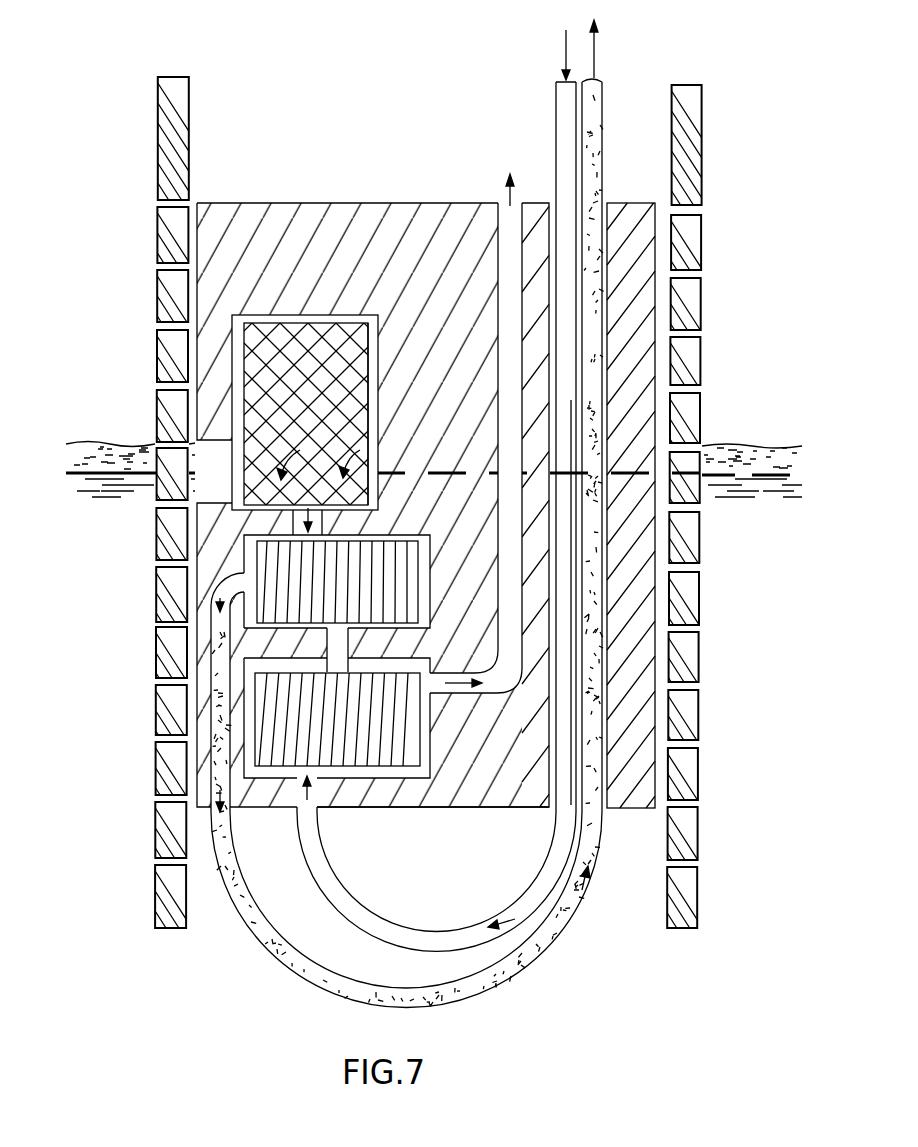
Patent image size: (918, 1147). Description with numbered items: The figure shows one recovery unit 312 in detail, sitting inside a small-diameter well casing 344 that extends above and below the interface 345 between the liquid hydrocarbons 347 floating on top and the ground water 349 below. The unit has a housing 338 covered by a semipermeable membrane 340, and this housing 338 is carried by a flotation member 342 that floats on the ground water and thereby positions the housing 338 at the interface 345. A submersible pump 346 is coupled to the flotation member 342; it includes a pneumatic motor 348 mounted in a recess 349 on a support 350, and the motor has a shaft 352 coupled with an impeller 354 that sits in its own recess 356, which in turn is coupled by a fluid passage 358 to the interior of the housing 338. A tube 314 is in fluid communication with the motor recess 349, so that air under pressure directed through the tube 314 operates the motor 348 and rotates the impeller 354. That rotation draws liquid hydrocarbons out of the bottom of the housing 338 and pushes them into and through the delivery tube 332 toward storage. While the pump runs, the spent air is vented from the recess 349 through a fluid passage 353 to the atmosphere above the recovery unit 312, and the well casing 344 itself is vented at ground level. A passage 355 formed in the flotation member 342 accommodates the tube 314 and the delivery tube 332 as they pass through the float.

The recovery unit 312 is at (291, 180).
The tube 314 is at (556, 110).
The delivery tube 332 is at (600, 106).
The housing 338 is at (382, 435).
The semipermeable membrane 340 is at (258, 355).
The flotation member 342 is at (345, 215).
The well casing 344 is at (708, 130).
The interface 345 is at (765, 470).
The submersible pump 346 is at (424, 735).
The liquid hydrocarbons 347 is at (721, 455).
The pneumatic motor 348 is at (262, 700).
The ground water / recess 349 is at (768, 497).
The support 350 is at (400, 795).
The shaft 352 is at (352, 645).
The fluid passage 353 is at (503, 233).
The impeller 354 is at (250, 560).
The passage 355 is at (607, 215).
The recess 356 is at (420, 568).
The fluid passage 358 is at (293, 525).